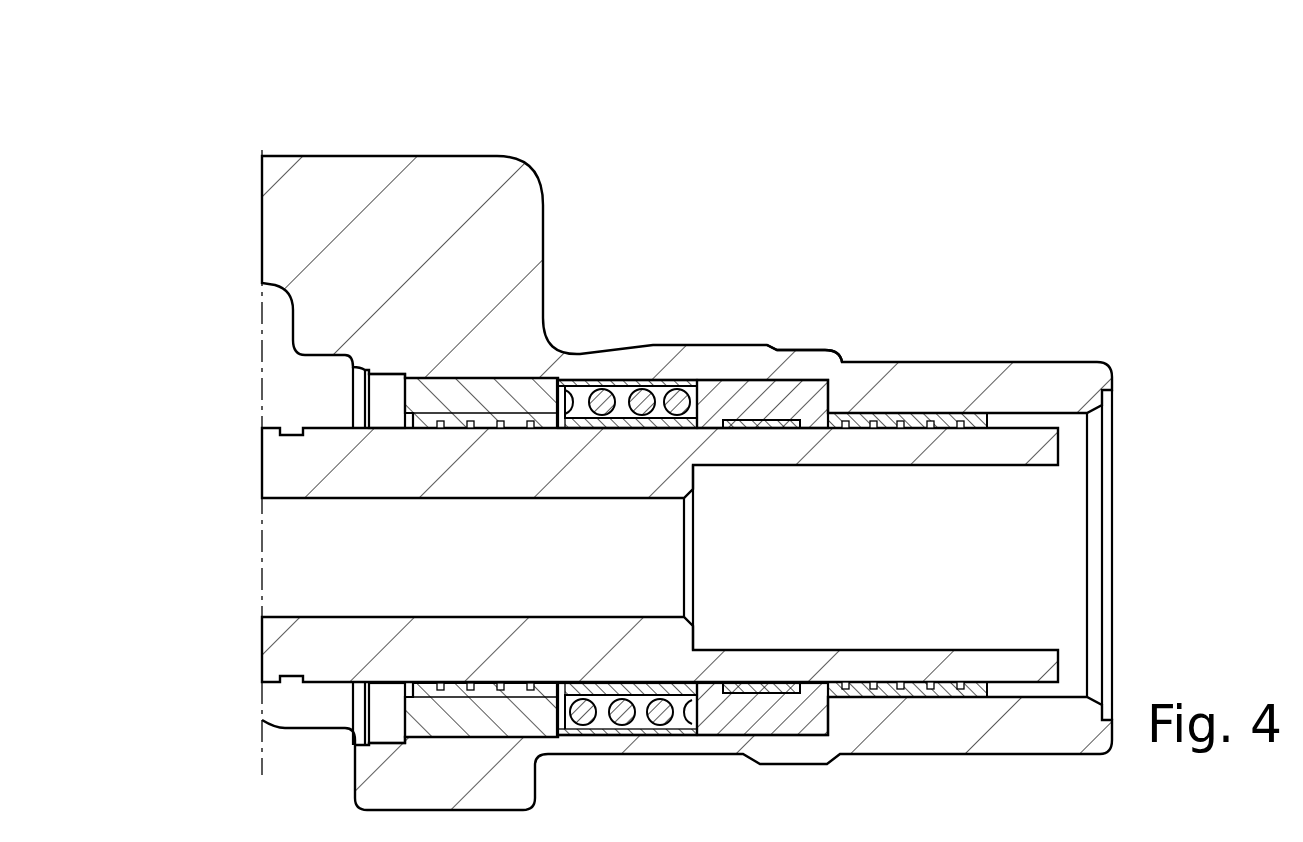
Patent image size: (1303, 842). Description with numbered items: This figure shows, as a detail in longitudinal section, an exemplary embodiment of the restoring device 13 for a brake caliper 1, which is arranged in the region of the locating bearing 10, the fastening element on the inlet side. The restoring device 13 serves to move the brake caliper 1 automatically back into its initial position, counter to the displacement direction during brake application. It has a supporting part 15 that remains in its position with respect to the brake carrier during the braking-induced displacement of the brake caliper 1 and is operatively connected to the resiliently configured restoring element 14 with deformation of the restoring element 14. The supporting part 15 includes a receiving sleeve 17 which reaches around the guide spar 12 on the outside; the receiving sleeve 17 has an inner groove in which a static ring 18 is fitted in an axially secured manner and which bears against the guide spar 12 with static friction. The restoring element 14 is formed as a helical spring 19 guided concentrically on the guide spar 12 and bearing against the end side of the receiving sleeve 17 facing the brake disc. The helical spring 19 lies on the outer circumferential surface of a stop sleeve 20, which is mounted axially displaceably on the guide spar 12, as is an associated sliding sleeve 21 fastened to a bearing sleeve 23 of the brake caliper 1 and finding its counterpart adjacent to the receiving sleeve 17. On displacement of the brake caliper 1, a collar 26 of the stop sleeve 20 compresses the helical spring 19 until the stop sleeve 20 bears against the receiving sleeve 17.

The brake caliper 1 is at (463, 192).
The locating bearing 10 is at (742, 770).
The guide spar 12 is at (330, 643).
The restoring device 13 is at (712, 363).
The restoring element 14 is at (618, 372).
The supporting part 15 is at (815, 368).
The receiving sleeve 17 is at (826, 392).
The static ring 18 is at (786, 426).
The helical spring 19 is at (652, 378).
The stop sleeve 20 is at (693, 309).
The sliding sleeve 21 is at (460, 405).
The bearing sleeve 23 is at (432, 397).
The collar 26 is at (570, 728).